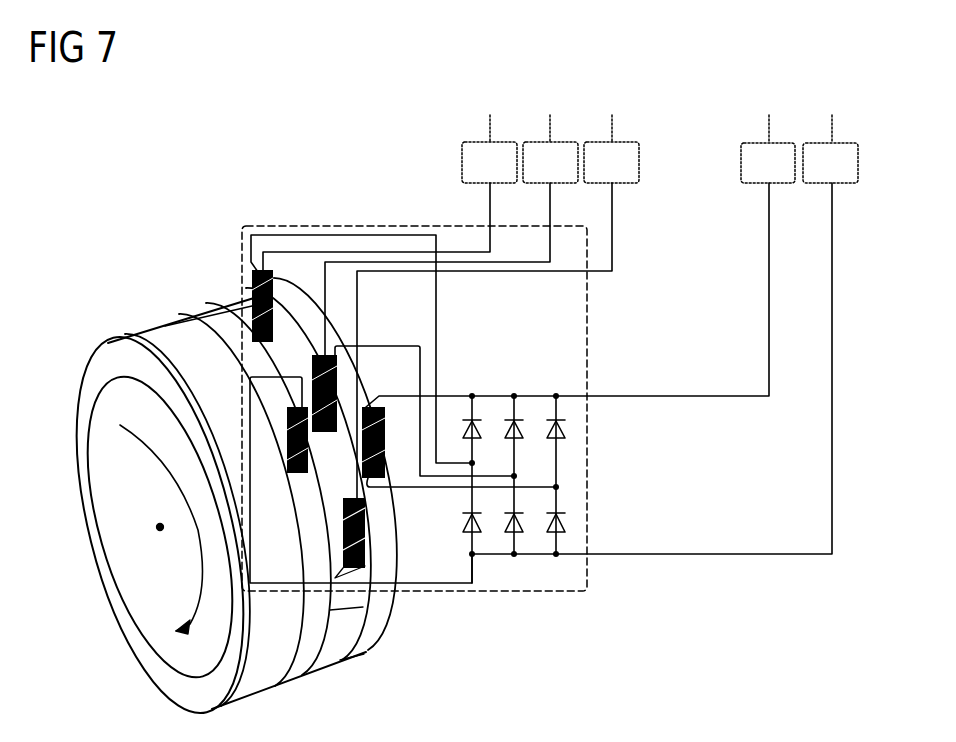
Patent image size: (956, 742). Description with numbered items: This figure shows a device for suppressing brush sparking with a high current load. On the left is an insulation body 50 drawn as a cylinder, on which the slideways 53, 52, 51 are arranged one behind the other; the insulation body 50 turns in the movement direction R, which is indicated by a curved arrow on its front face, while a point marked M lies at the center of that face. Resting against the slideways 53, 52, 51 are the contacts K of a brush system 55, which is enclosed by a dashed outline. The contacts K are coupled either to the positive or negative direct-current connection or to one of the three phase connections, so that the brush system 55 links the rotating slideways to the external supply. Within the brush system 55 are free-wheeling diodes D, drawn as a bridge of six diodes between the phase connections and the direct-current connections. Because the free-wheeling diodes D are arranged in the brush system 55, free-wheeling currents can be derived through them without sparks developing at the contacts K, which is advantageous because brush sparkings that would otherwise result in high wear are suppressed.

The insulation body 50 is at (145, 345).
The slideway 51 is at (287, 332).
The slideway 52 is at (308, 668).
The slideway 53 is at (360, 592).
The brush system 55 is at (550, 353).
The contacts K is at (367, 518).
The free-wheeling diodes D is at (566, 430).
The motor axis / center M is at (158, 526).
The movement direction R is at (161, 529).